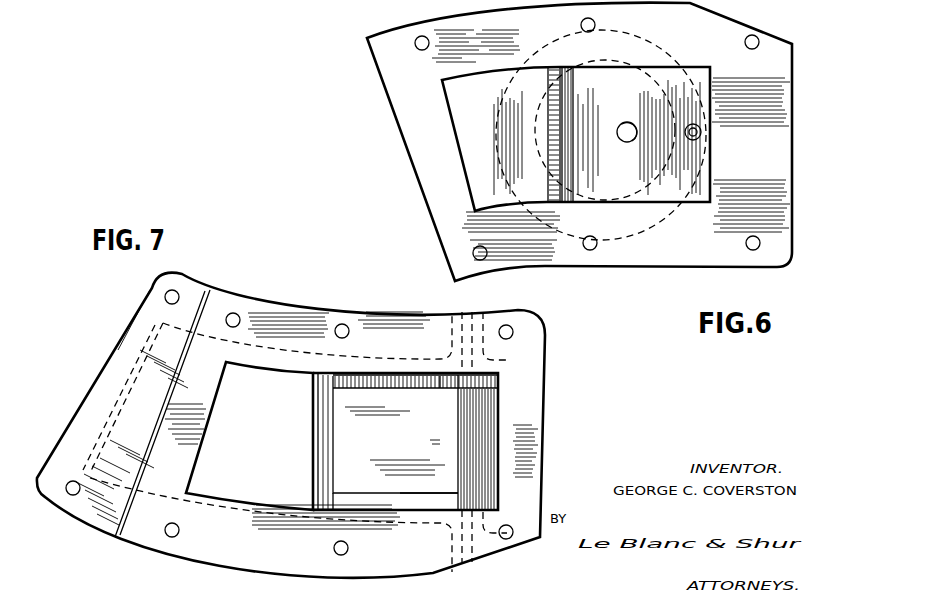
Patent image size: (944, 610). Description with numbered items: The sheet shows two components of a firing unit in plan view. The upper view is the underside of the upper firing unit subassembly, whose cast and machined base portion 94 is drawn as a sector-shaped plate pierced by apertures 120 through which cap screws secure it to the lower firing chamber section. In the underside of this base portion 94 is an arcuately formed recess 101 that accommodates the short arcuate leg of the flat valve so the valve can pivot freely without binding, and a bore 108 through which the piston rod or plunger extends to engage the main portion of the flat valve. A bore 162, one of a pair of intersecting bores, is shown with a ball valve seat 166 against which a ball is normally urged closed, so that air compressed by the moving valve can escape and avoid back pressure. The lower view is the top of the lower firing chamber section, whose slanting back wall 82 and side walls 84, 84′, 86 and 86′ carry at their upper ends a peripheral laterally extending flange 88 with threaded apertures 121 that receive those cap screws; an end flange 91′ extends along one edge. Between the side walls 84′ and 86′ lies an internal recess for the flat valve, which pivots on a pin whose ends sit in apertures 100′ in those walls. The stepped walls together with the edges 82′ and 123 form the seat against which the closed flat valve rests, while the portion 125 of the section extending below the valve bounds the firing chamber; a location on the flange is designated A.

In FIG. 6, the base portion 94 is at (775, 183).
In FIG. 6, the apertures 120 is at (420, 40).
In FIG. 6, the recess 101 is at (548, 155).
In FIG. 6, the bore 108 is at (622, 138).
In FIG. 6, the bore 162 is at (700, 128).
In FIG. 6, the ball valve seat 166 is at (699, 136).
In FIG. 7, the peripheral laterally extending flange 88 is at (298, 320).
In FIG. 7, the threaded apertures 121 is at (236, 318).
In FIG. 7, the end flange 91′ is at (127, 353).
In FIG. 7, the apertures 100′ is at (467, 323).
In FIG. 7, the area A is at (393, 320).
In FIG. 7, the slanting back wall 82 is at (460, 440).
In FIG. 7, the surface 82′ is at (475, 407).
In FIG. 7, the side wall 84 is at (378, 377).
In FIG. 7, the side wall 84′ is at (348, 377).
In FIG. 7, the portion of lower firing unit section 125 is at (404, 444).
In FIG. 7, the edge 123 is at (323, 470).
In FIG. 7, the side wall 86 is at (437, 483).
In FIG. 7, the side wall 86′ is at (345, 510).